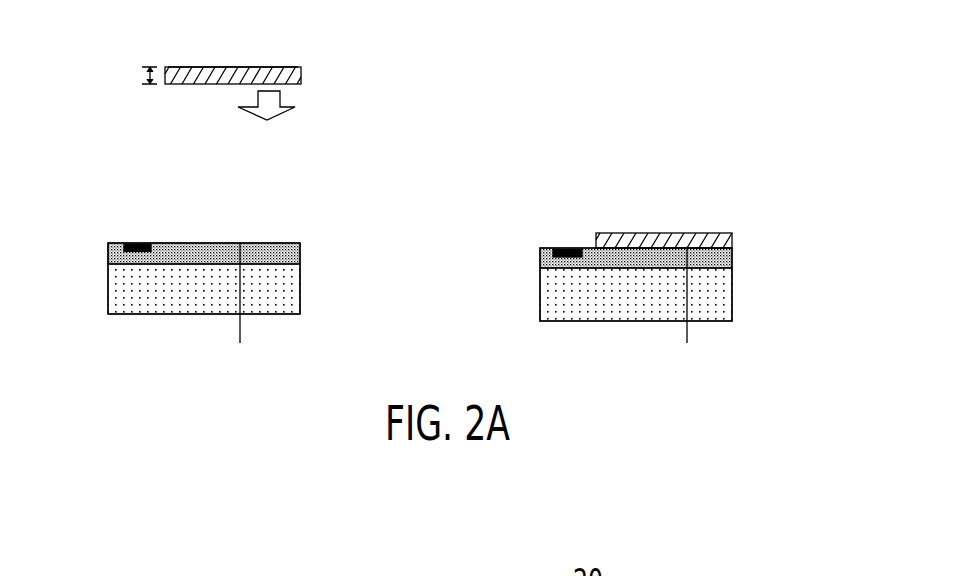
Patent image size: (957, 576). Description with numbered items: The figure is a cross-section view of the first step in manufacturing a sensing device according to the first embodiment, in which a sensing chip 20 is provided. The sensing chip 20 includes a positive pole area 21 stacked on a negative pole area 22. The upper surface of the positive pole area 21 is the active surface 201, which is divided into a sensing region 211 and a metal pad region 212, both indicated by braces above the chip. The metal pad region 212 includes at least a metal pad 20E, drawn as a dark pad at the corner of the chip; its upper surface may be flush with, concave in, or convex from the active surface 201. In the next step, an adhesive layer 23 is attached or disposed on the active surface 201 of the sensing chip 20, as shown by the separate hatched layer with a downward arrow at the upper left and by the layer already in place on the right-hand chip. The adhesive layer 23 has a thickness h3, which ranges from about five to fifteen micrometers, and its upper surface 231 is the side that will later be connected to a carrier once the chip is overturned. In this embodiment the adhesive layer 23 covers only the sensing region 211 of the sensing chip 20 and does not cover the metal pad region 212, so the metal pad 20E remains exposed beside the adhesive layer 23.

The sensing chip 20 is at (472, 294).
The metal pad 20E is at (126, 252).
The positive pole area 21 is at (300, 253).
The negative pole area 22 is at (300, 304).
The adhesive layer 23 is at (302, 77).
The active surface 201 is at (461, 316).
The sensing region 211 is at (172, 238).
The metal pad region 212 is at (111, 238).
The upper surface of the adhesive layer 231 is at (225, 67).
The thickness h3 is at (129, 76).